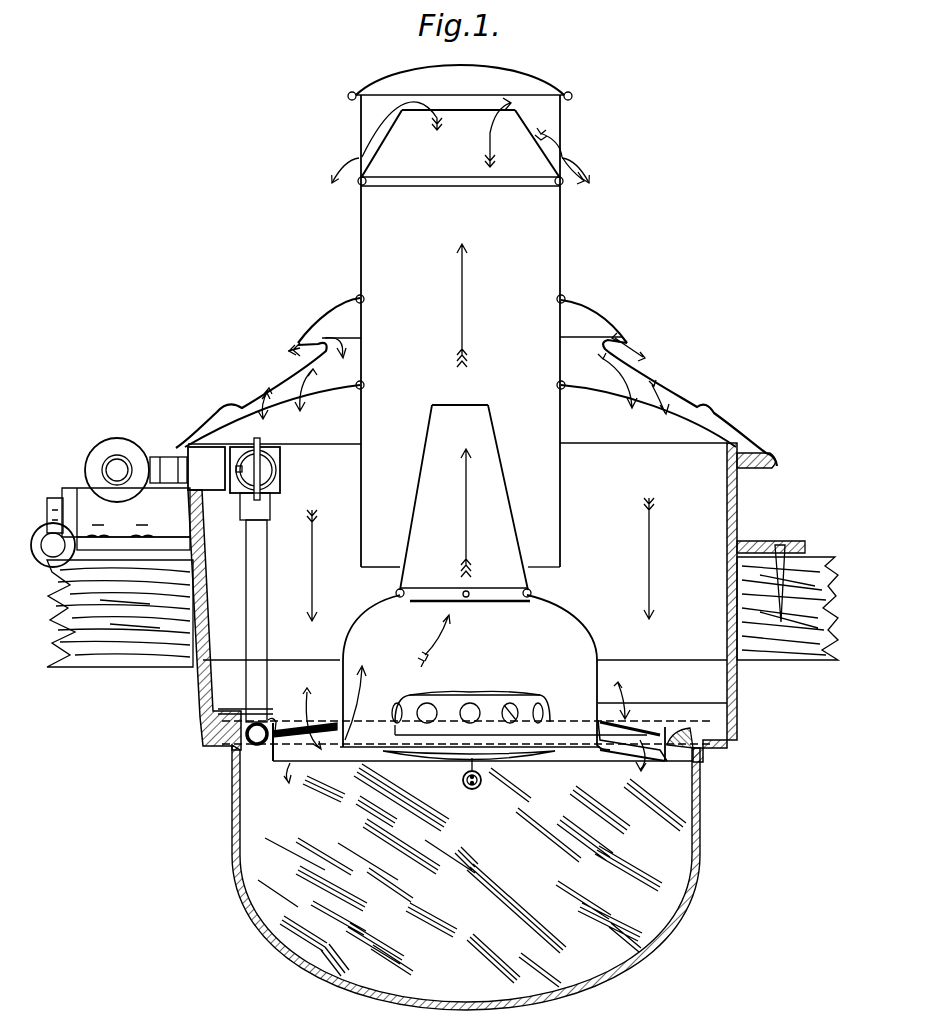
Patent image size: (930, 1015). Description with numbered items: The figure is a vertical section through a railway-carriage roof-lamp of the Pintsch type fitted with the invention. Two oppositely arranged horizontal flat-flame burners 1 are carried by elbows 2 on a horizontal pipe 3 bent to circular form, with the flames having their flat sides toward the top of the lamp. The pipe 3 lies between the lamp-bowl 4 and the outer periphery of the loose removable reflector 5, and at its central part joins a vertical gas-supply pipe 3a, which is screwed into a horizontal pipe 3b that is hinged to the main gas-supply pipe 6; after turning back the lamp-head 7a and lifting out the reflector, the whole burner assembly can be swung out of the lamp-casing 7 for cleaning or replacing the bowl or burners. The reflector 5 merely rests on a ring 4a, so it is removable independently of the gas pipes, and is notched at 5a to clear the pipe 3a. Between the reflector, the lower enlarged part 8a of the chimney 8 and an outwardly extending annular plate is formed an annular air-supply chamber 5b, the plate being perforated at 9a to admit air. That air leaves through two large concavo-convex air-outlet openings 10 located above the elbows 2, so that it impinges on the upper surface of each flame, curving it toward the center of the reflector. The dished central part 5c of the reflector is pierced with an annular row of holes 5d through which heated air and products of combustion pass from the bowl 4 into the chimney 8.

The flat-flame burner 1 is at (483, 783).
The elbow 2 is at (476, 766).
The horizontal pipe 3 is at (257, 745).
The vertical gas-supply pipe 3a is at (262, 598).
The horizontal pipe 3b is at (234, 469).
The lamp-bowl 4 is at (466, 877).
The ring 4a is at (703, 726).
The reflector 5 is at (577, 748).
The notch 5a is at (270, 722).
The annular air-supply chamber 5b is at (636, 750).
The raised or recessed central part 5c is at (493, 703).
The holes 5d is at (427, 706).
The main gas-supply pipe 6 is at (120, 468).
The lamp-casing 7 is at (727, 615).
The lamp-head 7a is at (476, 316).
The chimney 8 is at (463, 501).
The lower enlarged part of the chimney 8a is at (475, 672).
The perforations 9a is at (336, 722).
The air-outlet openings 10 is at (445, 757).